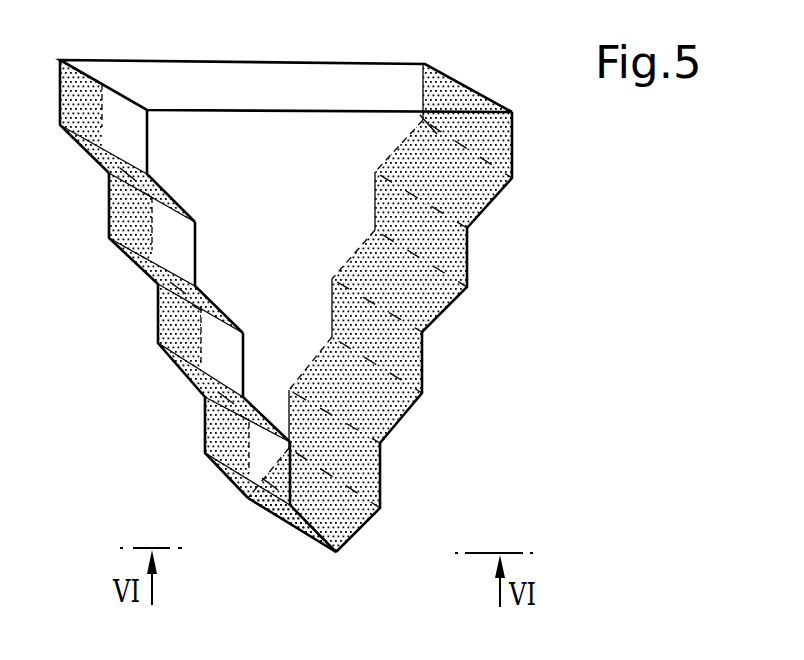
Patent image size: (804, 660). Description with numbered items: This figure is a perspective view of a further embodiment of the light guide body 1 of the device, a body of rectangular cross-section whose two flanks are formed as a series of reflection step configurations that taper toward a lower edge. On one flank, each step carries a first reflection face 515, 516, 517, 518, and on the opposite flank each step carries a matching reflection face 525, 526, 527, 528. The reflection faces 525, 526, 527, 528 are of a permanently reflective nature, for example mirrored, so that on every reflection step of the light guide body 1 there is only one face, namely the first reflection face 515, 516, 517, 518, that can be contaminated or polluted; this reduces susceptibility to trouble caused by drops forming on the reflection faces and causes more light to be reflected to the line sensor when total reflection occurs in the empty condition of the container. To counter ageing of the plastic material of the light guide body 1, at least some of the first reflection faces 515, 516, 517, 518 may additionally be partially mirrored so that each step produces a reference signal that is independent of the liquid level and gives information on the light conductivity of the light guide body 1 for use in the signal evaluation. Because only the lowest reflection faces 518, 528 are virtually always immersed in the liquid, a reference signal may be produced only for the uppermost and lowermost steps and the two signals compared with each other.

The light guide body 1 is at (466, 60).
The first reflection face 515 is at (105, 174).
The first reflection face 516 is at (143, 267).
The first reflection face 517 is at (190, 383).
The first reflection face 518 is at (250, 500).
The permanently reflective reflection face 525 is at (493, 197).
The permanently reflective reflection face 526 is at (452, 300).
The permanently reflective reflection face 527 is at (403, 412).
The permanently reflective reflection face 528 is at (355, 525).